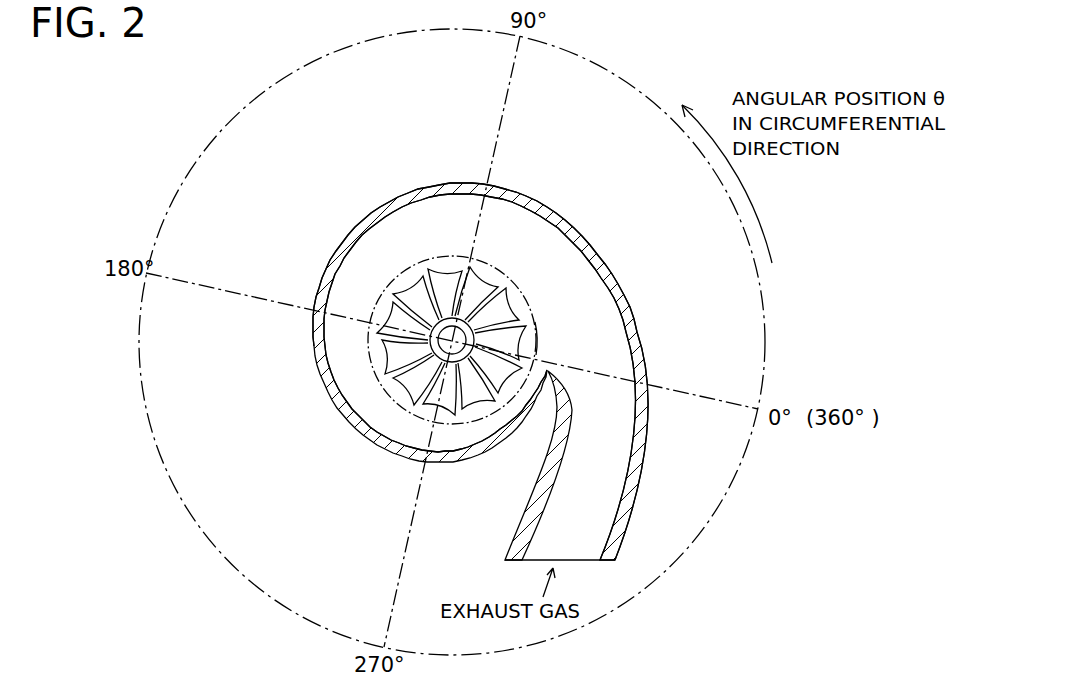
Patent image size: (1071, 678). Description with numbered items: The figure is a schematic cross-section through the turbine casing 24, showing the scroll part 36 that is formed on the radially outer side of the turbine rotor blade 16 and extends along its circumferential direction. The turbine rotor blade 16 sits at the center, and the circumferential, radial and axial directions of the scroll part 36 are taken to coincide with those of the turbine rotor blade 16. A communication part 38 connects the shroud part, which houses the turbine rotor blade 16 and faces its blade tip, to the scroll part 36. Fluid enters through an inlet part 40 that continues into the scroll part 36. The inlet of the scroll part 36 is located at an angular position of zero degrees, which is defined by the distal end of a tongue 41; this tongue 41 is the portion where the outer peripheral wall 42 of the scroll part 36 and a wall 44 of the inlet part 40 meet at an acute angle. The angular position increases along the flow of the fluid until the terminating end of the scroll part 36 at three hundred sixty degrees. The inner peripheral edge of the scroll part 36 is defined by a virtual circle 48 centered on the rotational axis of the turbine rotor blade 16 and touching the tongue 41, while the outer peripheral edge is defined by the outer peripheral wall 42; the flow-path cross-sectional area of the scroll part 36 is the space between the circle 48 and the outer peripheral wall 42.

The turbine rotor blade 16 is at (526, 298).
The turbine casing 24 is at (575, 217).
The scroll part 36 is at (542, 193).
The communication part 38 is at (498, 268).
The inlet part 40 is at (646, 461).
The tongue 41 is at (548, 374).
The outer peripheral wall 42 is at (601, 283).
The wall of the inlet part 44 is at (574, 407).
The virtual circle 48 is at (538, 334).